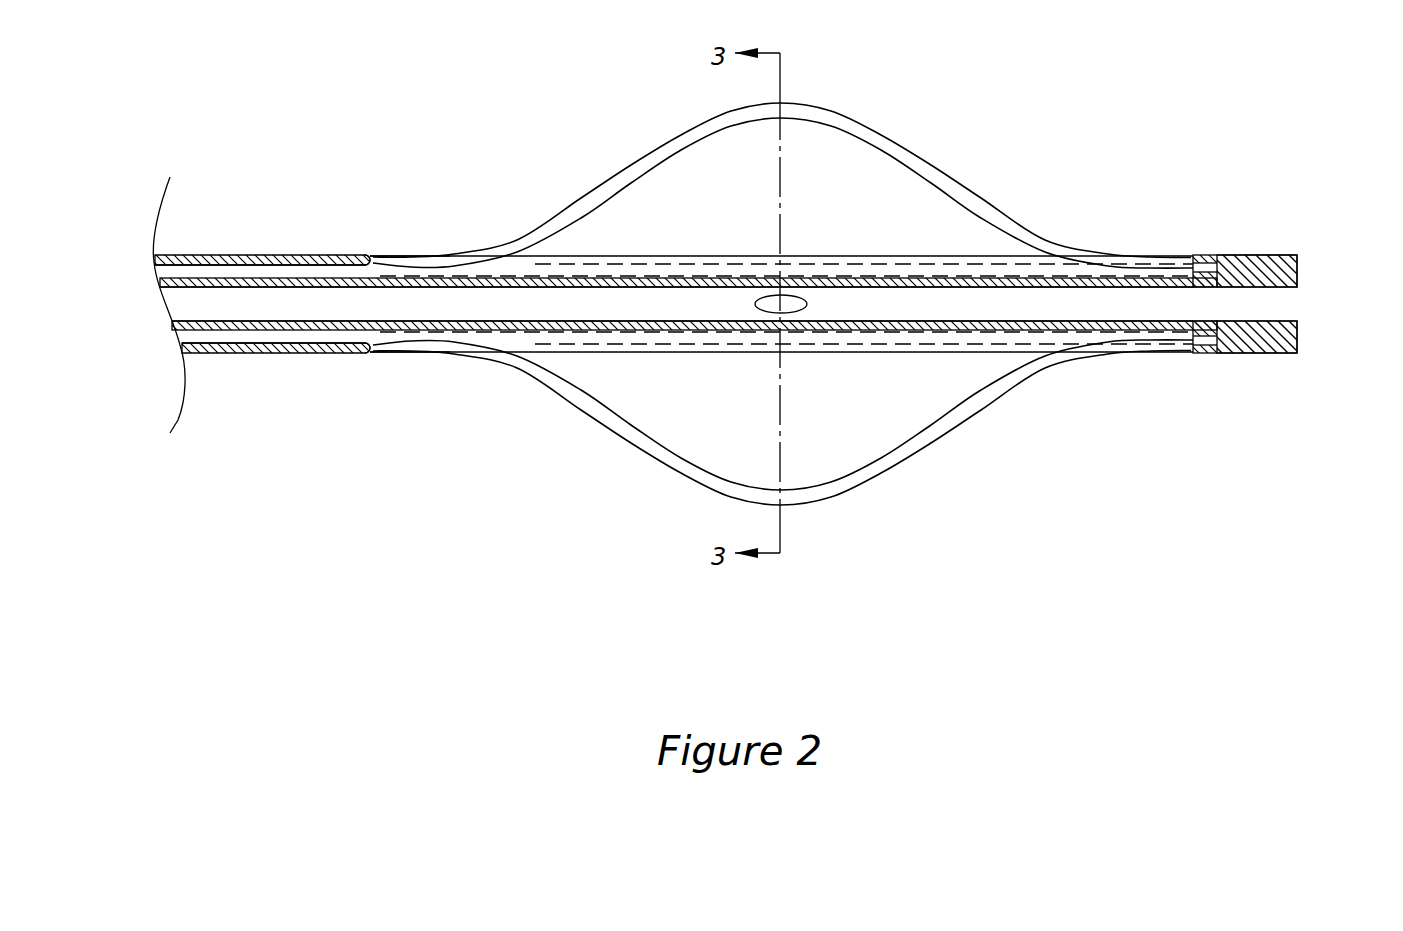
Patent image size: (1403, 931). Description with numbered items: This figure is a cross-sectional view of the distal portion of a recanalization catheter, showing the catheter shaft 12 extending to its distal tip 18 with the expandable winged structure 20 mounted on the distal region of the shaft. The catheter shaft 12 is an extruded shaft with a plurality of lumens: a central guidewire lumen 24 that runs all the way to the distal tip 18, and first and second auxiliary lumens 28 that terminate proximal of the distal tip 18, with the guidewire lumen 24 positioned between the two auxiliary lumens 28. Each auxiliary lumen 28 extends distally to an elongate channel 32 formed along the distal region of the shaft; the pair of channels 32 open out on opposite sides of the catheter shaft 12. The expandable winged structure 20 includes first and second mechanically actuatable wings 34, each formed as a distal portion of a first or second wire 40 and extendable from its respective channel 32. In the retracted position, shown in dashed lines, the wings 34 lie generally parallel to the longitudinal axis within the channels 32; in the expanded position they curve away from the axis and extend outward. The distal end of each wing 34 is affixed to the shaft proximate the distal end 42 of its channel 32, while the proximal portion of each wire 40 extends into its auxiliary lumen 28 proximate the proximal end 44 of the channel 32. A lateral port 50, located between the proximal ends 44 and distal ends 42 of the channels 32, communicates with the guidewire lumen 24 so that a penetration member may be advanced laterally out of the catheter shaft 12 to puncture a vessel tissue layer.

The catheter shaft 12 is at (265, 256).
The distal tip 18 is at (1298, 368).
The expandable winged structure 20 is at (757, 333).
The guidewire lumen 24 is at (980, 303).
The auxiliary lumen 28 is at (372, 258).
The elongate channel 32 is at (893, 270).
The mechanically actuatable wing 34 is at (847, 128).
The wire 40 is at (177, 270).
The distal end of channel 42 is at (1193, 242).
The proximal end of channel 44 is at (377, 237).
The lateral port 50 is at (795, 296).